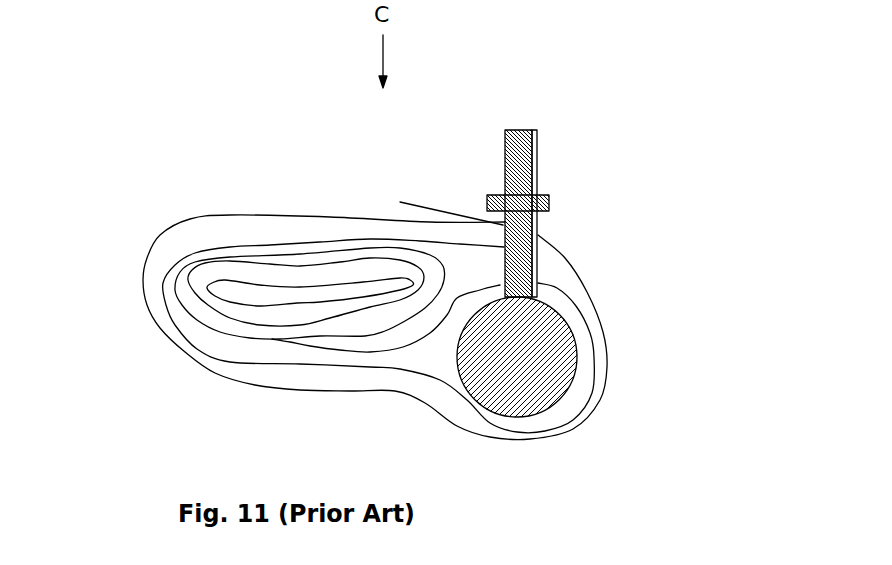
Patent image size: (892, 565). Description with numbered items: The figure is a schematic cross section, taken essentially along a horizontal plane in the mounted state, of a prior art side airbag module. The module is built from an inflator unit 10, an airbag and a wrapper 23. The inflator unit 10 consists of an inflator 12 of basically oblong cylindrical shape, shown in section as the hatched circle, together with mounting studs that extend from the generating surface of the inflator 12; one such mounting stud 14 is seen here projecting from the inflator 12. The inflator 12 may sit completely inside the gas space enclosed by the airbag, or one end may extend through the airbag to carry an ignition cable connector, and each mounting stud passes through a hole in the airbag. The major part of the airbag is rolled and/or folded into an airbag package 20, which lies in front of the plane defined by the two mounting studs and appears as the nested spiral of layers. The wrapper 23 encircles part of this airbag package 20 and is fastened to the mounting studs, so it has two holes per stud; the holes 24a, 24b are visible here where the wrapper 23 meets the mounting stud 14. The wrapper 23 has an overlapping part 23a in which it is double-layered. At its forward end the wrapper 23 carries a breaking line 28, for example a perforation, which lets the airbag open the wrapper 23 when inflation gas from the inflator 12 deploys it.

The inflator unit 10 is at (589, 397).
The inflator 12 is at (533, 377).
The mounting stud 14 is at (537, 170).
The airbag package 20 is at (320, 312).
The wrapper 23 is at (186, 219).
The overlapping part 23a is at (440, 208).
The hole of the wrapper 24a is at (538, 268).
The hole of the wrapper 24b is at (533, 237).
The breaking line 28 is at (417, 301).